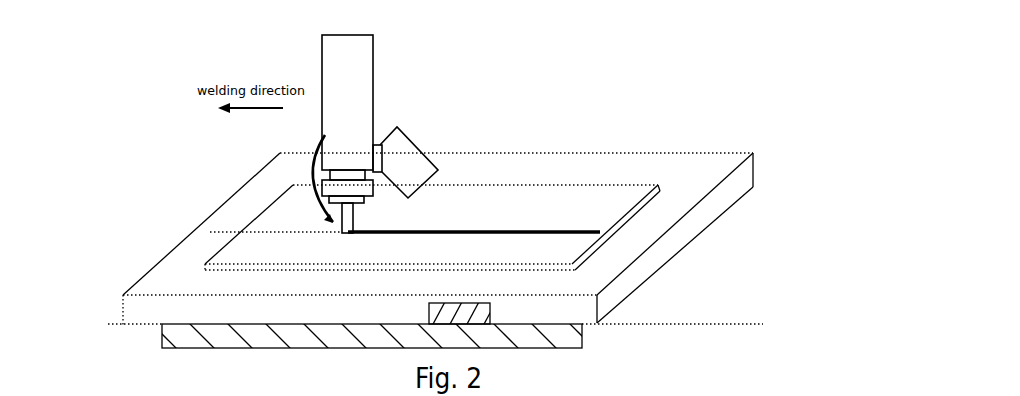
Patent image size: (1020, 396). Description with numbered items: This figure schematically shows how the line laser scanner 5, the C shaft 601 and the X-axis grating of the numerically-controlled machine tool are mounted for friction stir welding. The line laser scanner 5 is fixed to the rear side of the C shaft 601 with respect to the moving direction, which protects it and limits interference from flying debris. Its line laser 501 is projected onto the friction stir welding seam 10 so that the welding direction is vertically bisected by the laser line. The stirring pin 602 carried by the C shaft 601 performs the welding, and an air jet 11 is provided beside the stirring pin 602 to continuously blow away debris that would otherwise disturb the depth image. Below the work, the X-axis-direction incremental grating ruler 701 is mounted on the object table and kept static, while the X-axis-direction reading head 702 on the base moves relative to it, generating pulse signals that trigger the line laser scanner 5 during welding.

The C shaft 601 is at (338, 87).
The line laser scanner 5 is at (380, 147).
The air jet 11 is at (323, 180).
The stirring pin 602 is at (341, 225).
The line laser 501 is at (370, 236).
The welding seam 10 is at (565, 232).
The X-axis-direction reading head 702 is at (429, 310).
The X-axis-direction incremental grating ruler 701 is at (203, 337).